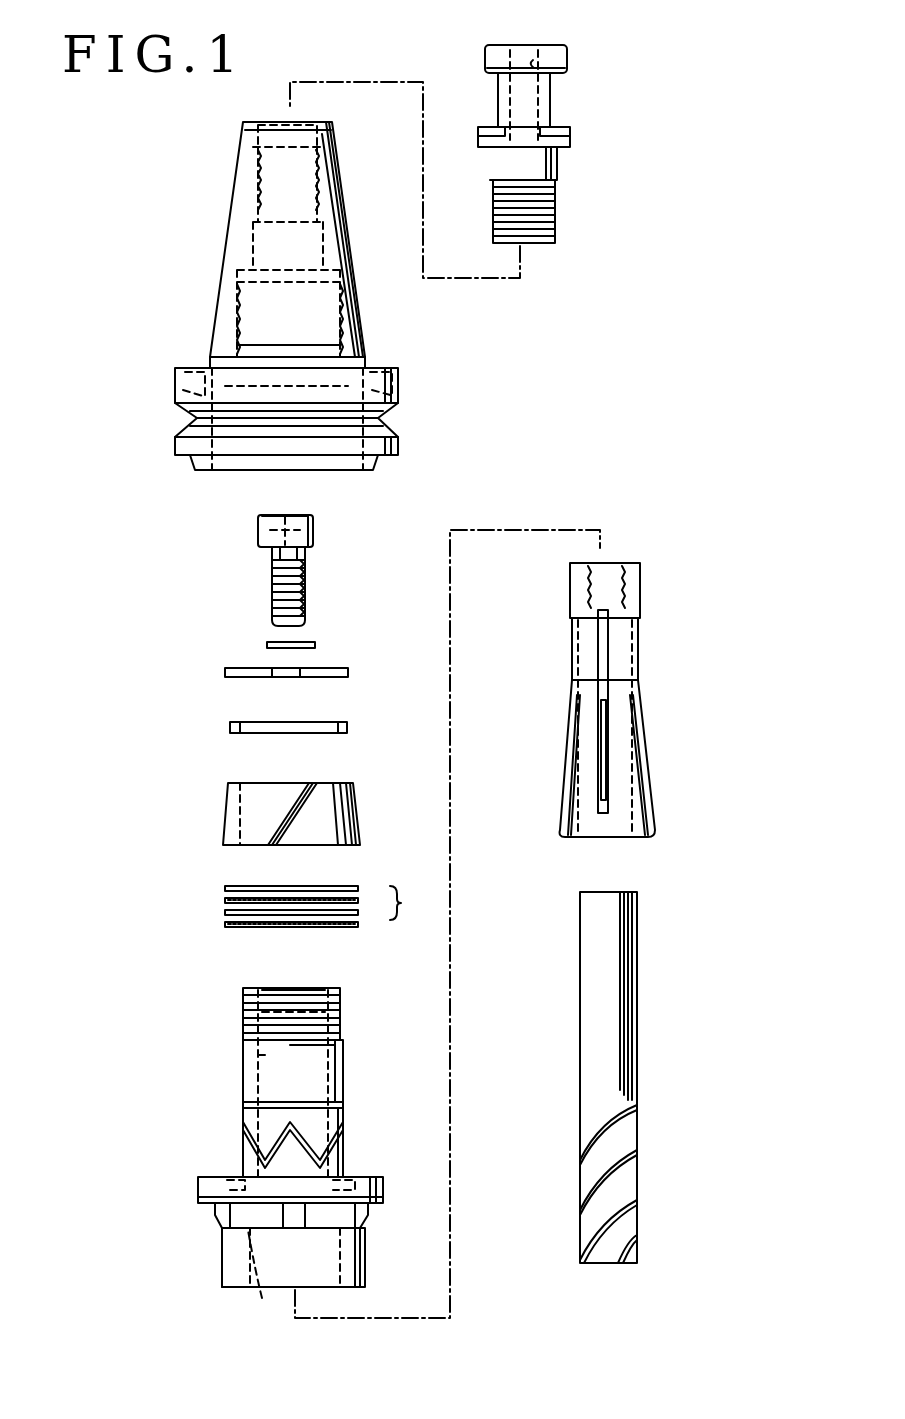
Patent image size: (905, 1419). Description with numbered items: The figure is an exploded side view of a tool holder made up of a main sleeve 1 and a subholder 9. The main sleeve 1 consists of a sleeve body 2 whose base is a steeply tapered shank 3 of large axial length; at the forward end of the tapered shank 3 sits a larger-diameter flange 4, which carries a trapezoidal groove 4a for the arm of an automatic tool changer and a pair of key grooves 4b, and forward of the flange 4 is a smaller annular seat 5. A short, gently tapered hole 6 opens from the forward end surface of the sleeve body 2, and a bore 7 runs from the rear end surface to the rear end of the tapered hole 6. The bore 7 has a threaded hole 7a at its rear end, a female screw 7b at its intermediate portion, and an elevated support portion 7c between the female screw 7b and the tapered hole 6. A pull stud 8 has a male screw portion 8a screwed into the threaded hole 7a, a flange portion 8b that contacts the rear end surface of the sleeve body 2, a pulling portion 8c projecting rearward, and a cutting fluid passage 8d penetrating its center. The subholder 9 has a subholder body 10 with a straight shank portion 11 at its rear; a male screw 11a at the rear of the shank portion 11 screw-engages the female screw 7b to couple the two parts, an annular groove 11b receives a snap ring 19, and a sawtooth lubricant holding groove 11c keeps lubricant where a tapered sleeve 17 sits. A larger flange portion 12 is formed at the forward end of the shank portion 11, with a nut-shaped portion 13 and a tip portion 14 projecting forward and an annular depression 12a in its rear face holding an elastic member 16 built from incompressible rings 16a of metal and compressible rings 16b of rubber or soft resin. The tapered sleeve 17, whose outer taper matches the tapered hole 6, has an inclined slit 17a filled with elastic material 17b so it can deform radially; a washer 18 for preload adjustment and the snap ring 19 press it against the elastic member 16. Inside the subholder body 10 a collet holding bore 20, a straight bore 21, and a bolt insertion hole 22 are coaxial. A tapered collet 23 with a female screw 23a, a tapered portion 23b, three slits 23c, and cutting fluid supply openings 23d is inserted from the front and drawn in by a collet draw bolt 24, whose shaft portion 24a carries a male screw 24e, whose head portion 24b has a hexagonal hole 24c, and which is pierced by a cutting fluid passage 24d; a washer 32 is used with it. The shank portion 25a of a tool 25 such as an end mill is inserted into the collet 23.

The main sleeve 1 is at (221, 236).
The sleeve body 2 is at (220, 282).
The tapered shank 3 is at (346, 228).
The flange 4 is at (400, 372).
The groove 4a is at (196, 419).
The key grooves 4b is at (213, 397).
The annular seat 5 is at (400, 447).
The tapered hole 6 is at (222, 466).
The bore 7 is at (250, 225).
The threaded hole 7a is at (320, 181).
The female screw 7b is at (340, 306).
The elevated support portion 7c is at (345, 346).
The pull stud 8 is at (556, 100).
The male screw portion 8a is at (556, 200).
The flange portion 8b is at (571, 140).
The pulling portion 8c is at (568, 58).
The cutting fluid passage 8d is at (545, 60).
The subholder 9 is at (242, 1095).
The subholder body 10 is at (366, 1258).
The straight shank portion 11 is at (344, 1053).
The male screw 11a is at (341, 1000).
The annular groove 11b is at (344, 1095).
The lubricant holding groove 11c is at (341, 1135).
The flange portion 12 is at (199, 1190).
The annular depression 12a is at (232, 1178).
The nut-shaped portion 13 is at (369, 1215).
The tip portion 14 is at (221, 1258).
The elastic member 16 is at (418, 900).
The incompressible rings 16a is at (225, 900).
The compressible rings 16b is at (354, 924).
The tapered sleeve 17 is at (357, 815).
The slit 17a is at (293, 812).
The elastic material 17b is at (315, 797).
The washer 18 is at (340, 722).
The snap ring 19 is at (248, 668).
The collet holding bore 20 is at (241, 1286).
The straight bore 21 is at (262, 1060).
The bolt insertion hole 22 is at (289, 995).
The tapered collet 23 is at (571, 638).
The female screw 23a is at (630, 590).
The tapered portion 23b is at (633, 810).
The slits 23c is at (573, 760).
The cutting fluid supply opening 23d is at (609, 670).
The collet draw bolt 24 is at (315, 525).
The shaft portion 24a is at (306, 576).
The head portion 24b is at (258, 532).
The hexagonal hole 24c is at (268, 532).
The cutting fluid passage 24d is at (272, 561).
The male screw 24e is at (306, 603).
The tool 25 is at (601, 1026).
The shank portion 25a is at (637, 915).
The washer 32 is at (316, 645).